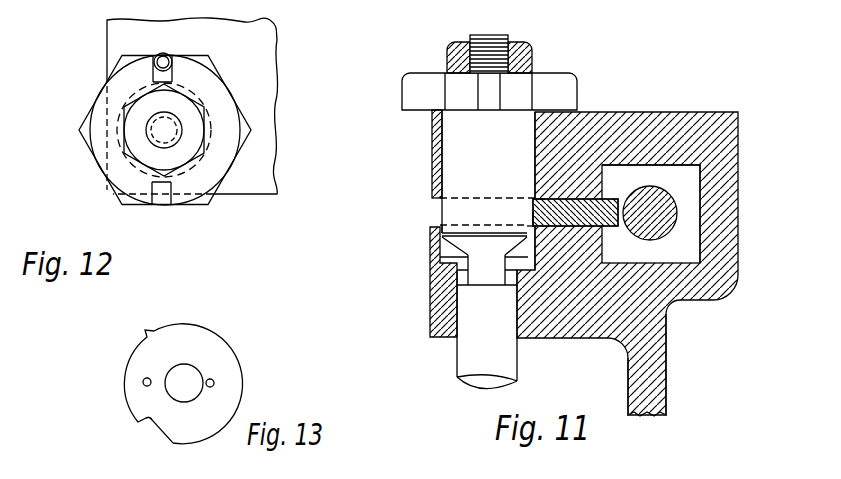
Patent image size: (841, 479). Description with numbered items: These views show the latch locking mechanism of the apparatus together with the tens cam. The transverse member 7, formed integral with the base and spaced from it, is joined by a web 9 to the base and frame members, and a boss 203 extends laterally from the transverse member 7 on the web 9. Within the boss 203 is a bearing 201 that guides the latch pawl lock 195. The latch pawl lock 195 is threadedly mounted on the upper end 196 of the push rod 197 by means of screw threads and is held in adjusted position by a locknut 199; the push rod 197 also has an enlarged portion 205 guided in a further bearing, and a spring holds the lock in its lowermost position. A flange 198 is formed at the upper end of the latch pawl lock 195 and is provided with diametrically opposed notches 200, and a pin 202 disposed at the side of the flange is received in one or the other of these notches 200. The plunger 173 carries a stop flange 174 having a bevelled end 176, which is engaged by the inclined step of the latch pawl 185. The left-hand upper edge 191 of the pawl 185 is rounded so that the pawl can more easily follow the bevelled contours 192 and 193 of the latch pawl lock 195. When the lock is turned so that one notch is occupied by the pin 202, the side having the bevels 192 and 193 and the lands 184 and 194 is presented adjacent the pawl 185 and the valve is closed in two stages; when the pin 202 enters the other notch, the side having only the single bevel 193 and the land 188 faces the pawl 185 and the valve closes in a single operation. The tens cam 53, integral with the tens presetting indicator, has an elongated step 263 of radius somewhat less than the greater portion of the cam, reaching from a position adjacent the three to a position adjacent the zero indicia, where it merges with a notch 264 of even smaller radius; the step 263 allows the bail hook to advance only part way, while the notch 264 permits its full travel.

In FIG. 12, the transverse member 7 is at (257, 58).
In FIG. 11, the transverse member 7 is at (597, 330).
In FIG. 11, the web 9 is at (665, 376).
In FIG. 13, the tens cam 53 is at (220, 357).
In FIG. 11, the plunger 173 is at (658, 233).
In FIG. 11, the stop flange 174 is at (703, 187).
In FIG. 11, the bevelled end 176 is at (662, 175).
In FIG. 11, the land 184 is at (533, 207).
In FIG. 11, the latch pawl 185 is at (590, 222).
In FIG. 11, the land 188 is at (443, 227).
In FIG. 11, the rounded upper edge 191 is at (543, 200).
In FIG. 11, the bevel 192 is at (532, 218).
In FIG. 11, the bevel 193 is at (458, 242).
In FIG. 11, the land 194 is at (527, 233).
In FIG. 11, the latch pawl lock 195 is at (542, 85).
In FIG. 12, the upper end of push rod 196 is at (153, 139).
In FIG. 11, the upper end of push rod 196 is at (503, 40).
In FIG. 11, the push rod 197 is at (478, 277).
In FIG. 12, the flange 198 is at (228, 115).
In FIG. 11, the flange 198 is at (422, 80).
In FIG. 11, the locknut 199 is at (458, 42).
In FIG. 12, the notches 200 is at (172, 78).
In FIG. 11, the notches 200 is at (480, 108).
In FIG. 11, the bearing 201 is at (442, 172).
In FIG. 12, the pin 202 is at (170, 57).
In FIG. 11, the boss 203 is at (430, 317).
In FIG. 11, the enlarged portion 205 is at (500, 357).
In FIG. 13, the elongated step 263 is at (124, 381).
In FIG. 13, the notch 264 is at (150, 426).